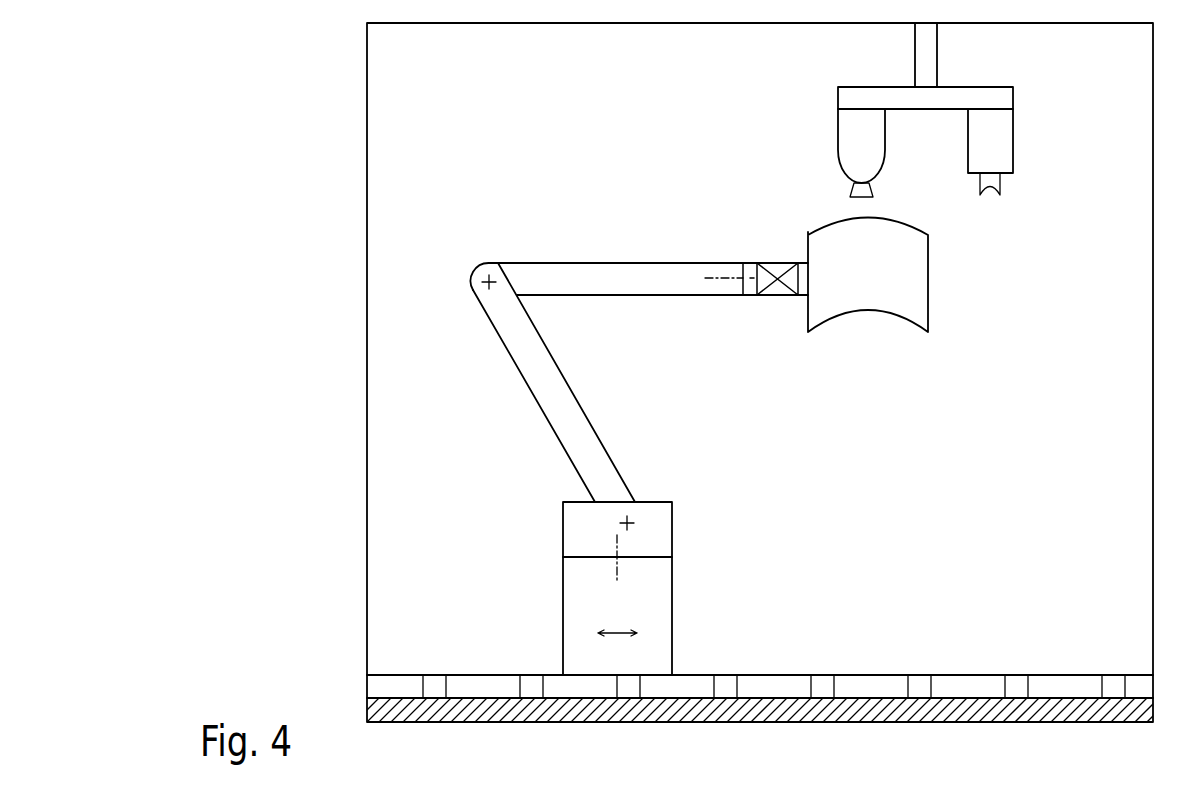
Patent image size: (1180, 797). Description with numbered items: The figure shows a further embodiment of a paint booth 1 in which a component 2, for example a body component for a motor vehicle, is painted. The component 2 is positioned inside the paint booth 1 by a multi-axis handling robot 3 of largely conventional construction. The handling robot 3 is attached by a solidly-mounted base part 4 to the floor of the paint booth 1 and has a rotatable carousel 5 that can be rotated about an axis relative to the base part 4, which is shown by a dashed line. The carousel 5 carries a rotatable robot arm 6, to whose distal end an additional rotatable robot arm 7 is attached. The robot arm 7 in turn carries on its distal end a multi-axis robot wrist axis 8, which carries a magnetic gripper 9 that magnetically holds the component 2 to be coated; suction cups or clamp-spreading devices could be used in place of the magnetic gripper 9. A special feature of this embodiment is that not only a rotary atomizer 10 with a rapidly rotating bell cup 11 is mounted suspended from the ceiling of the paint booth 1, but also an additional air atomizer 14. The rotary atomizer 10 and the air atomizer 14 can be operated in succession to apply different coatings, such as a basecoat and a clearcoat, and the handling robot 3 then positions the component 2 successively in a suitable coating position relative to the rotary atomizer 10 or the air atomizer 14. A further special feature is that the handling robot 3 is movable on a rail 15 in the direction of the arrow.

The paint booth 1 is at (366, 190).
The component 2 is at (929, 292).
The handling robot 3 is at (710, 492).
The base part 4 is at (562, 653).
The carousel 5 is at (563, 530).
The robot arm 6 is at (527, 383).
The robot arm 7 is at (622, 262).
The robot wrist axis 8 is at (798, 265).
The magnetic gripper 9 is at (800, 285).
The rotary atomizer 10 is at (838, 132).
The bell cup 11 is at (850, 190).
The air atomizer 14 is at (1013, 130).
The rail 15 is at (773, 674).